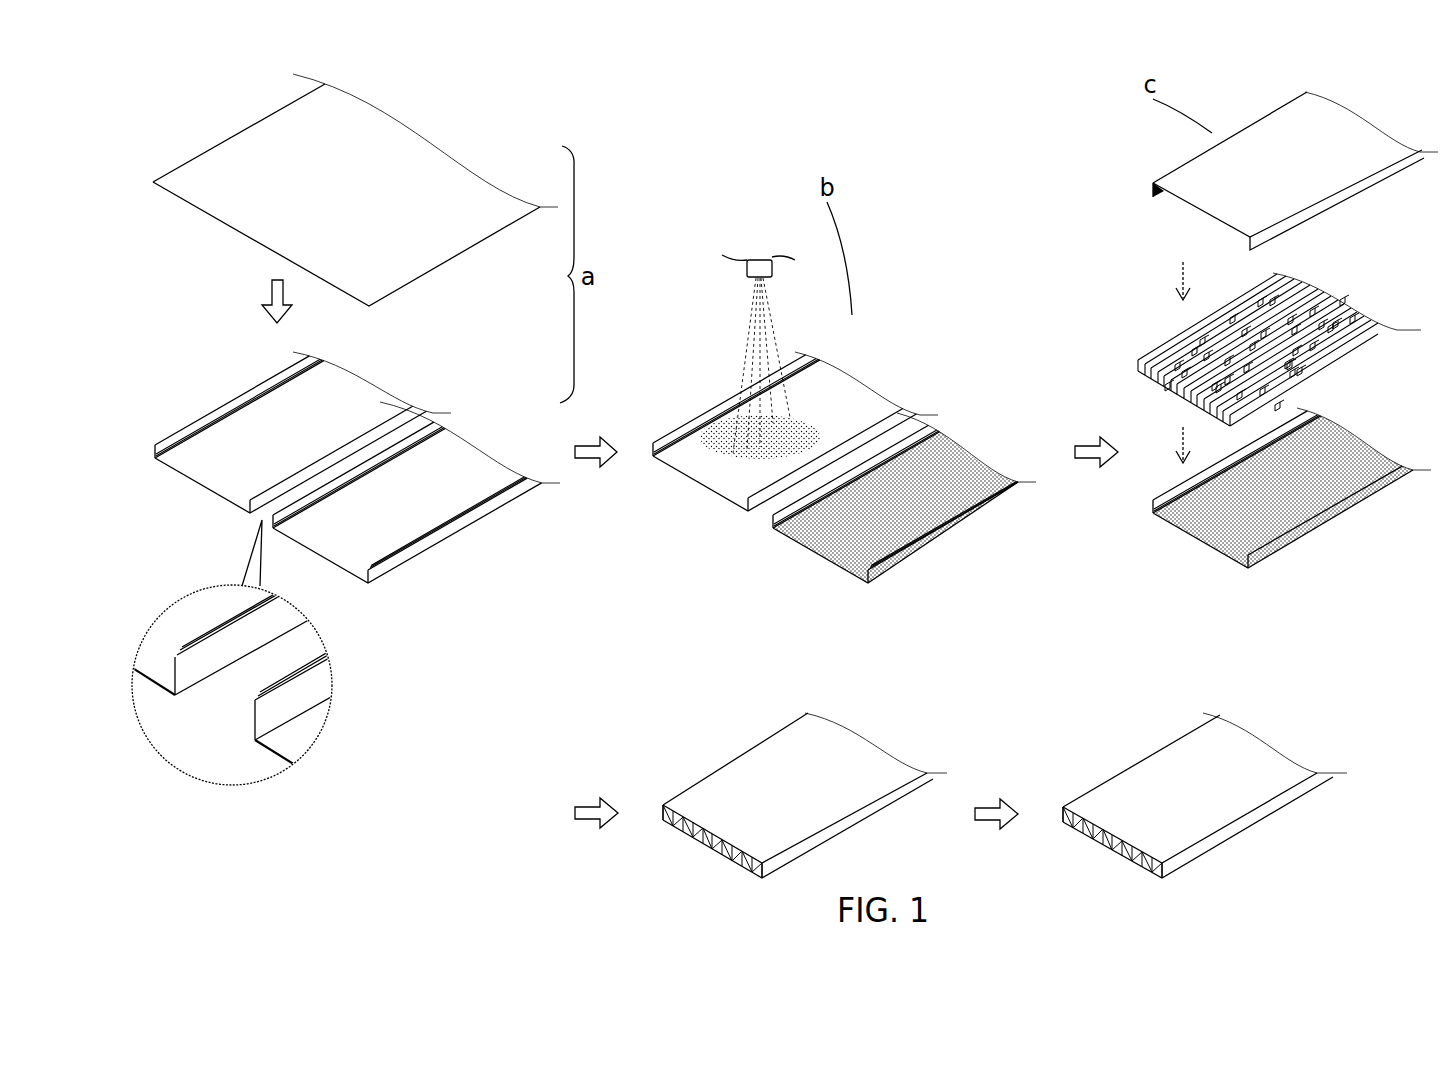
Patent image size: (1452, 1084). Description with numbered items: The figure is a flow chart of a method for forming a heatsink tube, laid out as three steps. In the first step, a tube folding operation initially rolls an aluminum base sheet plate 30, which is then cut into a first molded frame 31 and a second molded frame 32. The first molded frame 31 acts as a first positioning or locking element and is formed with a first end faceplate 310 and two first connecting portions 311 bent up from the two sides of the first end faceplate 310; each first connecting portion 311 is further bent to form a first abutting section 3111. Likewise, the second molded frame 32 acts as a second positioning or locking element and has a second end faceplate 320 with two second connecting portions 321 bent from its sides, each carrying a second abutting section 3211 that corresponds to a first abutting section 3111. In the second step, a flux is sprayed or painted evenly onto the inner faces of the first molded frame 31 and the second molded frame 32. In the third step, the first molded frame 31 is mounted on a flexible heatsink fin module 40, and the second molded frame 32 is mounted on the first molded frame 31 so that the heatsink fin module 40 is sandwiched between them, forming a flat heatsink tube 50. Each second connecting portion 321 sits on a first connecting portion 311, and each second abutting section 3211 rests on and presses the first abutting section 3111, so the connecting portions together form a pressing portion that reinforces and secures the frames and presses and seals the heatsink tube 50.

The base sheet plate 30 is at (422, 119).
The first molded frame 31 is at (327, 405).
The second molded frame 32 is at (443, 473).
The first connecting portion 311 is at (258, 392).
The first abutting section 3111 is at (201, 432).
The second connecting portion 321 is at (473, 518).
The second abutting section 3211 is at (407, 548).
The first end faceplate 310 is at (695, 485).
The second end faceplate 320 is at (817, 560).
The heatsink fin module 40 is at (1358, 290).
The heatsink tube 50 is at (889, 741).